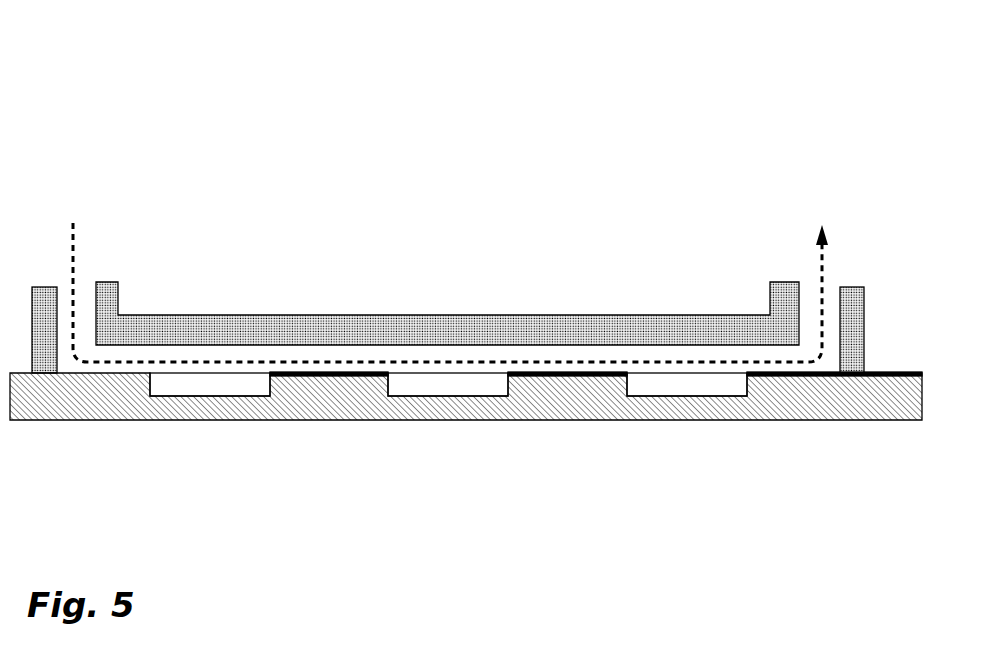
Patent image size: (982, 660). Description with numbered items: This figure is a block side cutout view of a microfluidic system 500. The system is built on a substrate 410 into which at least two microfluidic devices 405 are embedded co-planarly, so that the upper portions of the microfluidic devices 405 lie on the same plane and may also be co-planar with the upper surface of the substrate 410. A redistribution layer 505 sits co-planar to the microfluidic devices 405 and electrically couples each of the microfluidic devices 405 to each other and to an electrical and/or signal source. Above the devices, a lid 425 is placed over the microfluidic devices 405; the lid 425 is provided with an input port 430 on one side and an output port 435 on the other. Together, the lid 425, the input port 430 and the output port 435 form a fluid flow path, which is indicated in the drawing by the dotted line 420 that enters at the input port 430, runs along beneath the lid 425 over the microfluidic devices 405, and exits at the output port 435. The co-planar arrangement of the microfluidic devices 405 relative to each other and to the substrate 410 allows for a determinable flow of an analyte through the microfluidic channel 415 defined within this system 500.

The microfluidic system 500 is at (123, 104).
The substrate 410 is at (123, 398).
The microfluidic devices 405 is at (218, 382).
The redistribution layer 505 is at (340, 380).
The input port 430 is at (59, 268).
The output port 435 is at (805, 262).
The microfluidic channel 415 is at (443, 270).
The lid 425 is at (470, 330).
The dotted line 420 is at (444, 281).